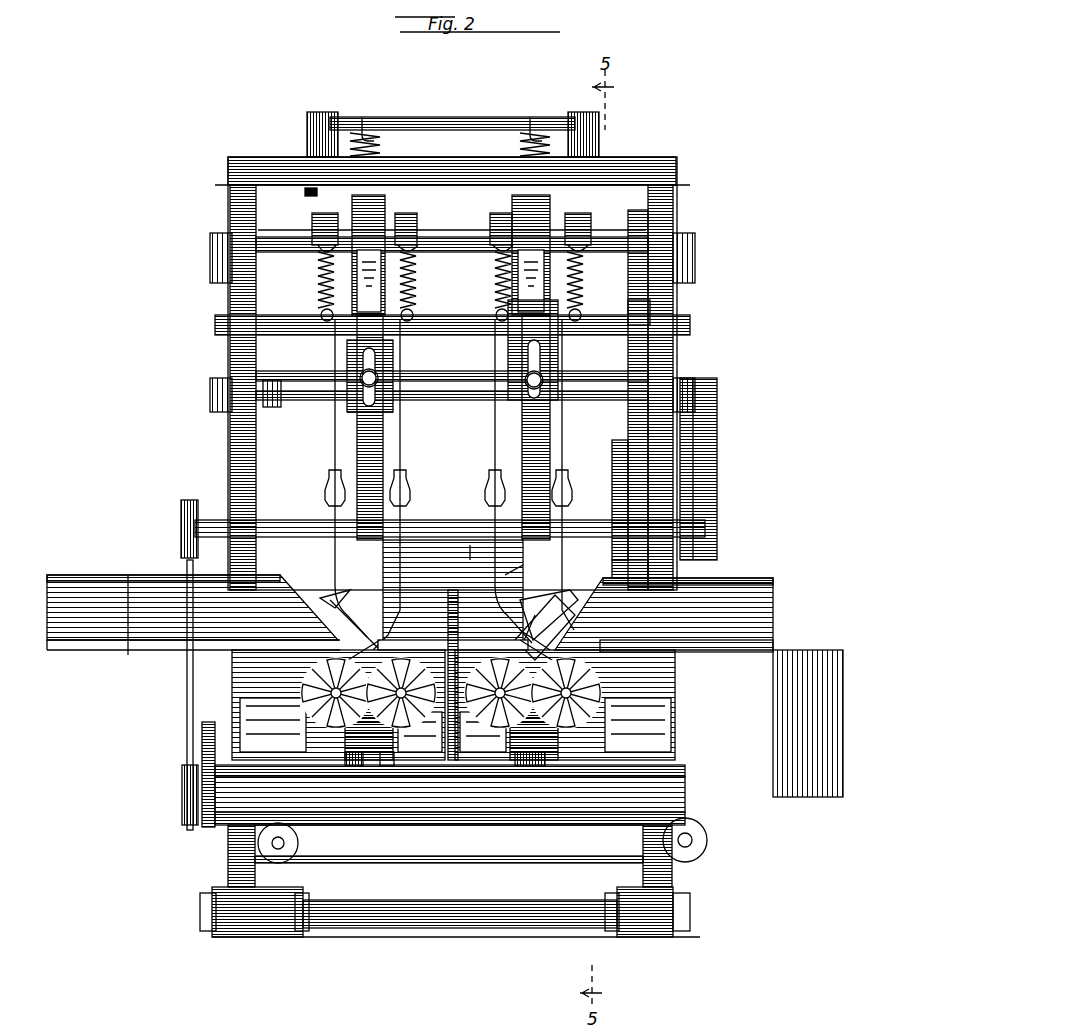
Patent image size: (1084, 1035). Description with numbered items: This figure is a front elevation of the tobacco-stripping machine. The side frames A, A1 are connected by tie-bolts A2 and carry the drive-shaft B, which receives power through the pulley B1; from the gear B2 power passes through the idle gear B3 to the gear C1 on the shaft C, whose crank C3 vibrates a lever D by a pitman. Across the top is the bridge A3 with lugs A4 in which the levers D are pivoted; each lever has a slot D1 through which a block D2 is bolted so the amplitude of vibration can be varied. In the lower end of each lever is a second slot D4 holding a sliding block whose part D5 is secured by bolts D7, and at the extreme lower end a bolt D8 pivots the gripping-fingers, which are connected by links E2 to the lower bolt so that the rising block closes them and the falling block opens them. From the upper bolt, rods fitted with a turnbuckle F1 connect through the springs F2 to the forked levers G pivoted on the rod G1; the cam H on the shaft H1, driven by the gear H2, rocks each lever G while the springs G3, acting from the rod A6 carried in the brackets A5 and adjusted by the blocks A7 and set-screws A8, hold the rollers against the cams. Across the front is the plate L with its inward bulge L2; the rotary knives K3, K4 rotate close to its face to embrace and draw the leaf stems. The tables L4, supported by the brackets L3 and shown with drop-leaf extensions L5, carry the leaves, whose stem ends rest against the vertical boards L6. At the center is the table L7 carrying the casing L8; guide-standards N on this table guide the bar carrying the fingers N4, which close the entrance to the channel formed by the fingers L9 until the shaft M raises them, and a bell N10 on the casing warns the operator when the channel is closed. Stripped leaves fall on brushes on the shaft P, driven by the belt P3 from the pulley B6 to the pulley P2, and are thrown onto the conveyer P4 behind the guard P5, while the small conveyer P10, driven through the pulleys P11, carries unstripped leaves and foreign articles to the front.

The side frame A is at (245, 308).
The side frame A1 is at (673, 345).
The tie-bolts A2 is at (475, 928).
The bridge A3 is at (262, 158).
The lugs A4 is at (453, 216).
The brackets A5 is at (307, 133).
The rod A6 is at (492, 118).
The blocks A7 is at (366, 116).
The set-screws A8 is at (318, 196).
The drive-shaft B is at (215, 518).
The pulley B1 is at (717, 447).
The gear B2 is at (618, 567).
The idle gear B3 is at (625, 478).
The pulley B6 is at (182, 512).
The shaft C is at (357, 435).
The gear C1 is at (648, 368).
The crank C3 is at (470, 372).
The lever D is at (520, 498).
The slot D1 is at (347, 410).
The block D2 is at (393, 365).
The second slot D4 is at (335, 583).
The sliding block part D5 is at (573, 601).
The bolts D7 is at (549, 615).
The bolt D8 is at (528, 625).
The links E2 is at (596, 618).
The turnbuckle F1 is at (325, 488).
The springs F2 is at (436, 280).
The forked lever G is at (490, 206).
The rod G1 is at (451, 289).
The springs G3 is at (450, 144).
The cam H is at (300, 352).
The shaft H1 is at (452, 275).
The gear H2 is at (650, 312).
The rotary knife K3 is at (525, 766).
The rotary knife K4 is at (358, 766).
The plate L is at (650, 698).
The inward bulge L2 is at (450, 794).
The brackets L3 is at (685, 768).
The tables L4 is at (200, 645).
The drop-leaf extensions L5 is at (110, 640).
The vertical boards L6 is at (160, 578).
The central table L7 is at (450, 620).
The casing L8 is at (445, 716).
The fingers L9 is at (461, 559).
The shaft M is at (455, 718).
The guide-standards N is at (505, 575).
The fingers N4 is at (340, 660).
The bell N10 is at (453, 595).
The shaft P is at (205, 827).
The pulley P2 is at (182, 793).
The belt P3 is at (187, 692).
The conveyer P4 is at (480, 863).
The guard P5 is at (685, 795).
The conveyer P10 is at (505, 826).
The pulleys P11 is at (208, 722).